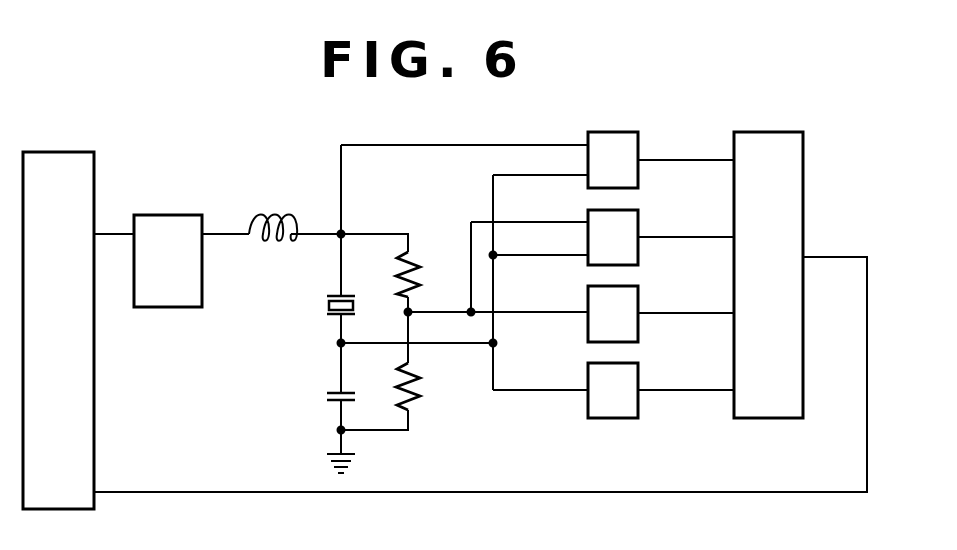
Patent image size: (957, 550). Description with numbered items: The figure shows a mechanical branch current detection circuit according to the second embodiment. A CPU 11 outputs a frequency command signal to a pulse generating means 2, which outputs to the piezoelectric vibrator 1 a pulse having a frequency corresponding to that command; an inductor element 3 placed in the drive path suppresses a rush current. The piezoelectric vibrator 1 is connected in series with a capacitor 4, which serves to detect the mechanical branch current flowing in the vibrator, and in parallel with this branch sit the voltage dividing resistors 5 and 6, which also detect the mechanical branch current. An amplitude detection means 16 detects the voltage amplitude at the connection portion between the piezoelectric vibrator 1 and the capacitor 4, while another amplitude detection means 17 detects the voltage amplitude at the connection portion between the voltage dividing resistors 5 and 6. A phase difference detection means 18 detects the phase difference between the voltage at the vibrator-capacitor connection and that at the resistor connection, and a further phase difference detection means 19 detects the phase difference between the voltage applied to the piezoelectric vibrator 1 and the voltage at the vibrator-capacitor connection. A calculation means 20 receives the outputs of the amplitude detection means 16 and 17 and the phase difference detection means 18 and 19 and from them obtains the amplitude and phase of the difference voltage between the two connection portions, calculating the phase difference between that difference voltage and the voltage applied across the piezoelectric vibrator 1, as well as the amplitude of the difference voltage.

The CPU 11 is at (76, 149).
The pulse generating means 2 is at (186, 211).
The inductor element 3 is at (251, 216).
The piezoelectric vibrator 1 is at (326, 298).
The capacitor 4 is at (326, 391).
The voltage dividing resistor 5 is at (422, 271).
The voltage dividing resistor 6 is at (422, 400).
The amplitude detection means 16 is at (640, 369).
The amplitude detection means 17 is at (640, 292).
The phase difference detection means 18 is at (640, 215).
The phase difference detection means 19 is at (640, 138).
The calculation means 20 is at (784, 132).